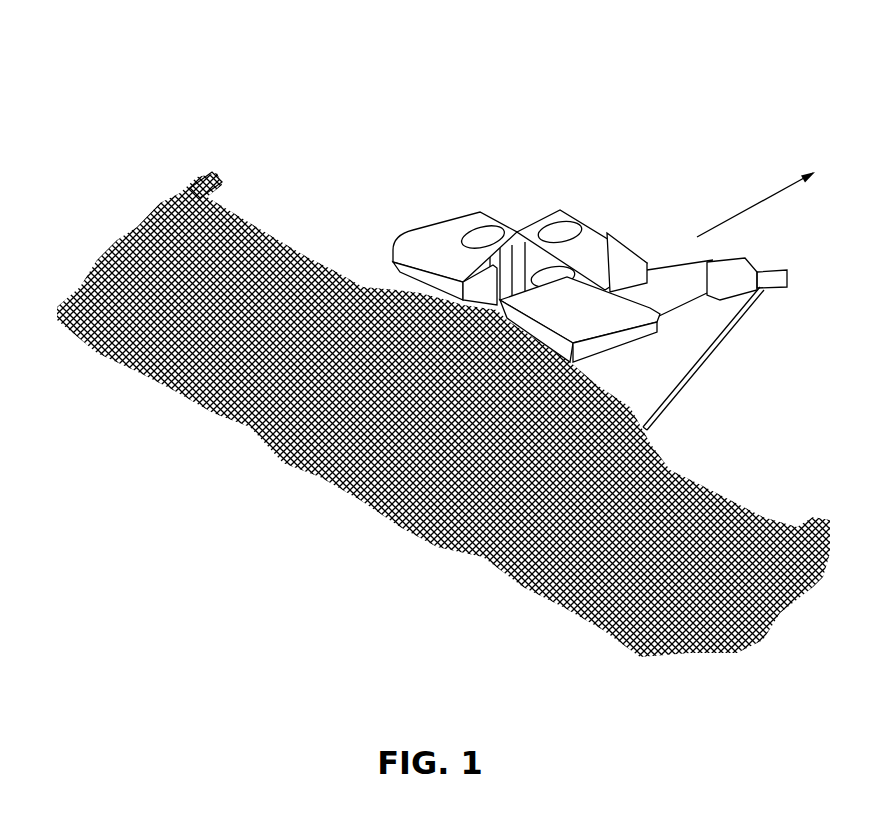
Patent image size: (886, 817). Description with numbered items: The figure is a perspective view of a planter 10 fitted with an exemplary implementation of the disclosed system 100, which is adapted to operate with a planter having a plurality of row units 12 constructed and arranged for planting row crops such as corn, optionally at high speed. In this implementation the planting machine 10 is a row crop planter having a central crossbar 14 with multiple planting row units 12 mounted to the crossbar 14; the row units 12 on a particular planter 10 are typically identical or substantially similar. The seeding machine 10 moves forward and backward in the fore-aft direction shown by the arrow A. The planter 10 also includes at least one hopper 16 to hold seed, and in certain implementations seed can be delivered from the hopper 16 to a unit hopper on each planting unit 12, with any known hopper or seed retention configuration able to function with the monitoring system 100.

The system 100 is at (642, 68).
The planter 10 is at (681, 126).
The row unit 12 is at (140, 370).
The central crossbar 14 is at (188, 194).
The hopper 16 is at (540, 220).